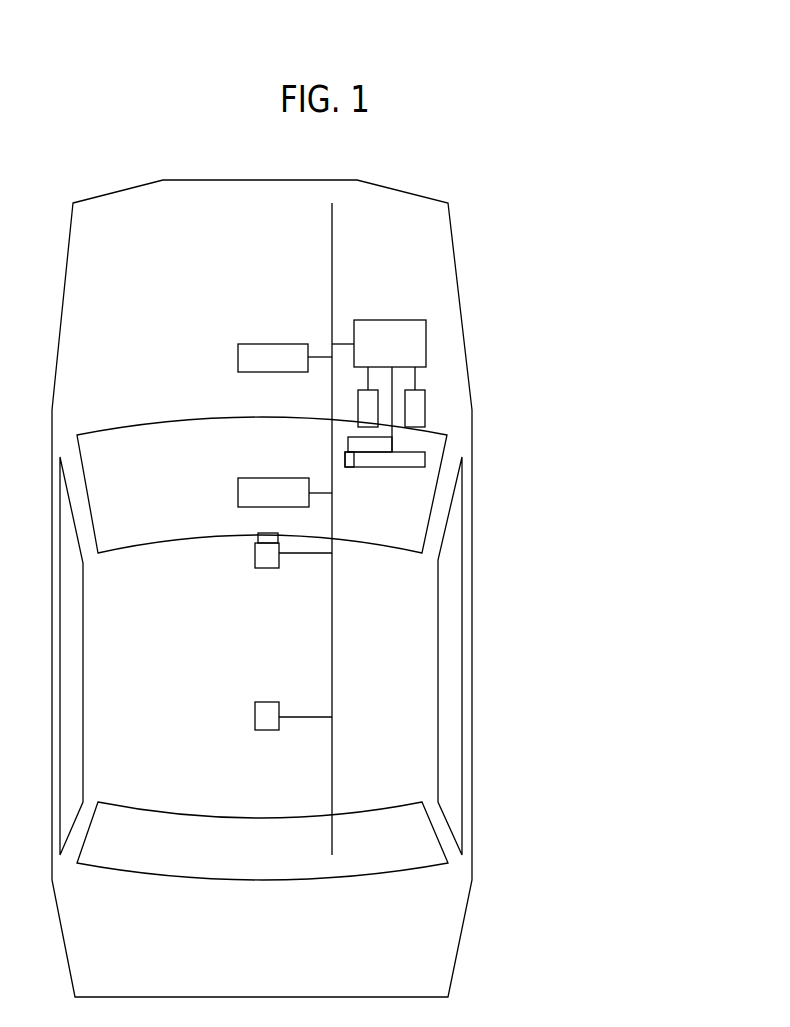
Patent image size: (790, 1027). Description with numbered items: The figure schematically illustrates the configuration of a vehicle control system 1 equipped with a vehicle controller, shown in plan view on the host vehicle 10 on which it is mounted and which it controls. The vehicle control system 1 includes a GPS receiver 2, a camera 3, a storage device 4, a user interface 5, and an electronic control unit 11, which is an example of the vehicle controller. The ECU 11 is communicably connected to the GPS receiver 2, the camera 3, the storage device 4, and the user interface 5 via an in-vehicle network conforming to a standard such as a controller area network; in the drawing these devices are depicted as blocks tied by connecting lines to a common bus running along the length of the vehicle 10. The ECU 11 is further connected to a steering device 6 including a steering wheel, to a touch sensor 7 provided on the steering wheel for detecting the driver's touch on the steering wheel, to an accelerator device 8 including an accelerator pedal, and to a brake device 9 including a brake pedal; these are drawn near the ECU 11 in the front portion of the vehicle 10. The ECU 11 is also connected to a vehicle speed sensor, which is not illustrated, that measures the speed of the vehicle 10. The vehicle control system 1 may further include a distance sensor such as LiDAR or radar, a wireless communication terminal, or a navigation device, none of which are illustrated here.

The vehicle control system 1 is at (634, 898).
The GPS receiver 2 is at (255, 720).
The camera 3 is at (255, 558).
The storage device 4 is at (237, 352).
The user interface 5 is at (238, 497).
The steering device 6 is at (426, 453).
The touch sensor 7 is at (345, 458).
The accelerator device 8 is at (426, 405).
The brake device 9 is at (358, 410).
The host vehicle 10 is at (472, 857).
The electronic control unit 11 is at (426, 352).